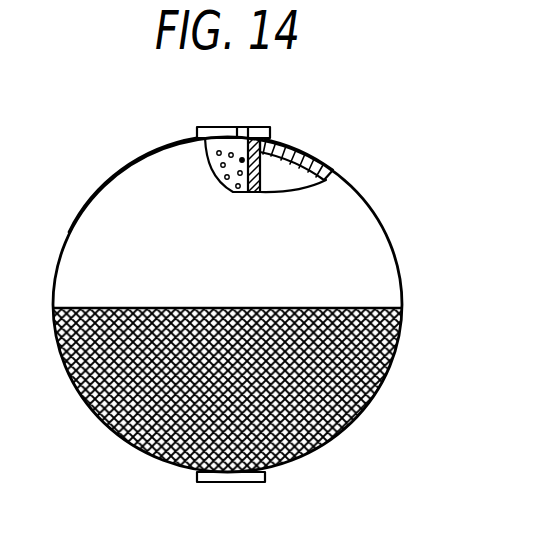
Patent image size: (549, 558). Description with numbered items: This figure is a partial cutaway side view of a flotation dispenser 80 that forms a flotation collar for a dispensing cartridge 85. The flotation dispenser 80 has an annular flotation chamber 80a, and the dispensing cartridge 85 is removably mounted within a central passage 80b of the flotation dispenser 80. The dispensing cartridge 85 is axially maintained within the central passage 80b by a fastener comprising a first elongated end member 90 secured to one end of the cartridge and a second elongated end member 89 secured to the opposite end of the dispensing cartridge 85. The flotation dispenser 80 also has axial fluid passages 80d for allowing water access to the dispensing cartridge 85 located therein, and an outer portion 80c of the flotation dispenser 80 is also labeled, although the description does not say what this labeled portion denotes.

The flotation dispenser 80 is at (282, 168).
The annular flotation chamber 80a is at (303, 151).
The central passage 80b is at (245, 193).
The outer spherical surface 80c is at (69, 232).
The axial fluid passages 80d is at (83, 408).
The dispensing cartridge 85 is at (230, 153).
The second elongated end member 89 is at (245, 482).
The first elongated end member 90 is at (243, 127).